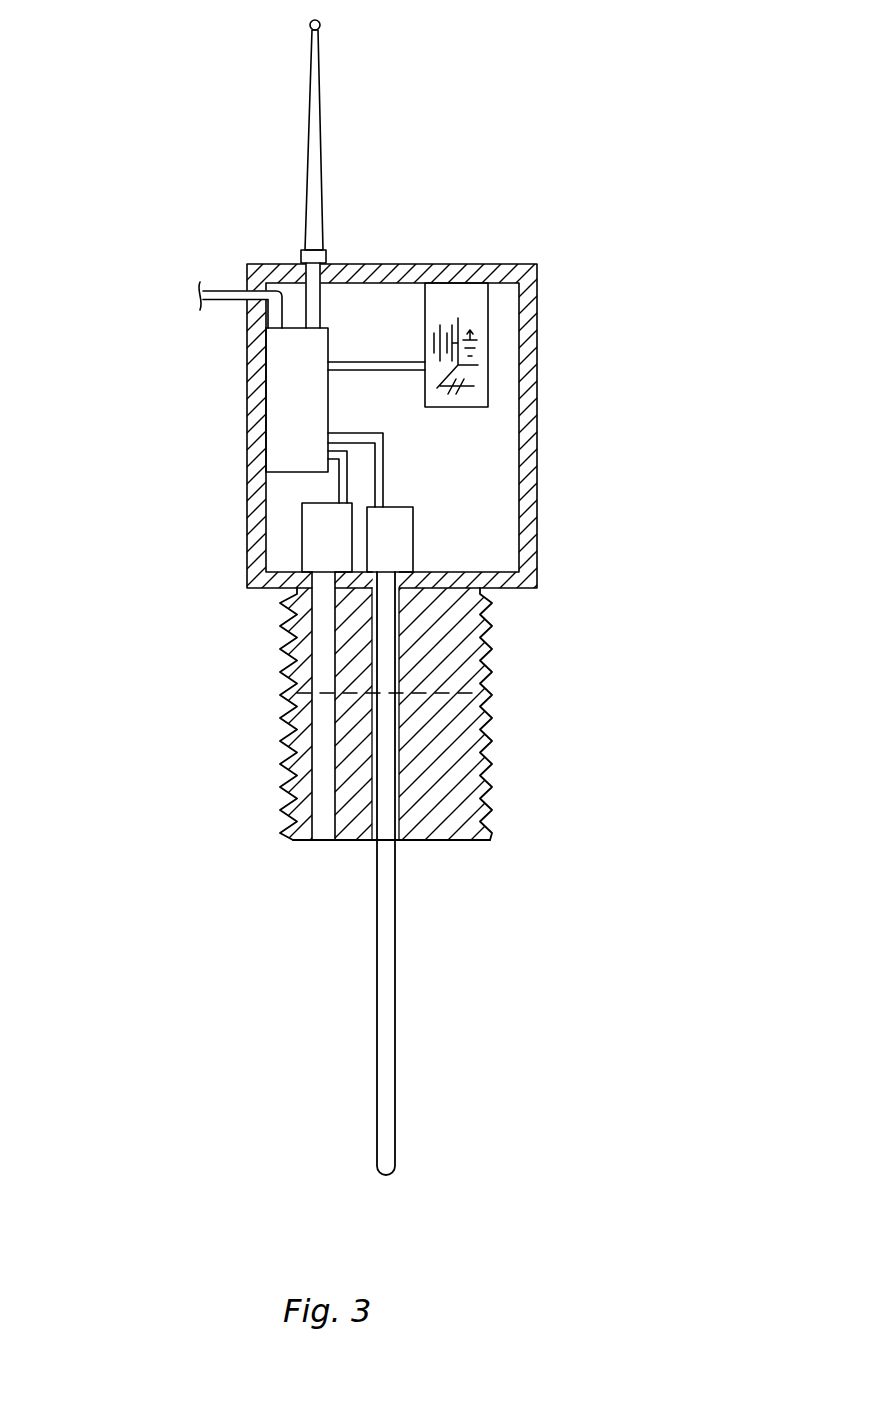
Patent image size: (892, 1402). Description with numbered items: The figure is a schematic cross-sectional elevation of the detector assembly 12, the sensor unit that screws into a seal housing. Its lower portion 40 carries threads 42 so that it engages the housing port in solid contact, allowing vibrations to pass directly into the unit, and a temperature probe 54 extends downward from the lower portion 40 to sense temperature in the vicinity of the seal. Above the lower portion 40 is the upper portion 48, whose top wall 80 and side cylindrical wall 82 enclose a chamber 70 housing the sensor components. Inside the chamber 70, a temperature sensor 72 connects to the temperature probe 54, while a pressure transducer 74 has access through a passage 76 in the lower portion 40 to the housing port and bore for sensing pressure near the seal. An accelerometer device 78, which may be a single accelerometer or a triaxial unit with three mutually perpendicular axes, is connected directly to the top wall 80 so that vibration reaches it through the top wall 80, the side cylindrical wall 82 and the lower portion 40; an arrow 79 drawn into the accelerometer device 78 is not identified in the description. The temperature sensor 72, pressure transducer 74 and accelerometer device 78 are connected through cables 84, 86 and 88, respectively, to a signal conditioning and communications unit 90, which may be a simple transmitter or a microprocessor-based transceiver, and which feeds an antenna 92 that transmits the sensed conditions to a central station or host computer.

The detector assembly 12 is at (528, 162).
The lower portion 40 is at (390, 706).
The threads 42 is at (485, 716).
The upper portion 48 is at (442, 395).
The temperature probe 54 is at (393, 952).
The chamber 70 is at (470, 437).
The temperature sensor 72 is at (415, 535).
The pressure transducer 74 is at (312, 540).
The passage 76 is at (322, 672).
The accelerometer device 78 is at (525, 292).
The power circuit 79 is at (455, 315).
The top wall 80 is at (443, 265).
The side cylindrical wall 82 is at (537, 443).
The cable 84 is at (385, 490).
The cable 86 is at (345, 470).
The cable 88 is at (374, 362).
The signal conditioning and communications unit 90 is at (273, 390).
The antenna 92 is at (323, 97).